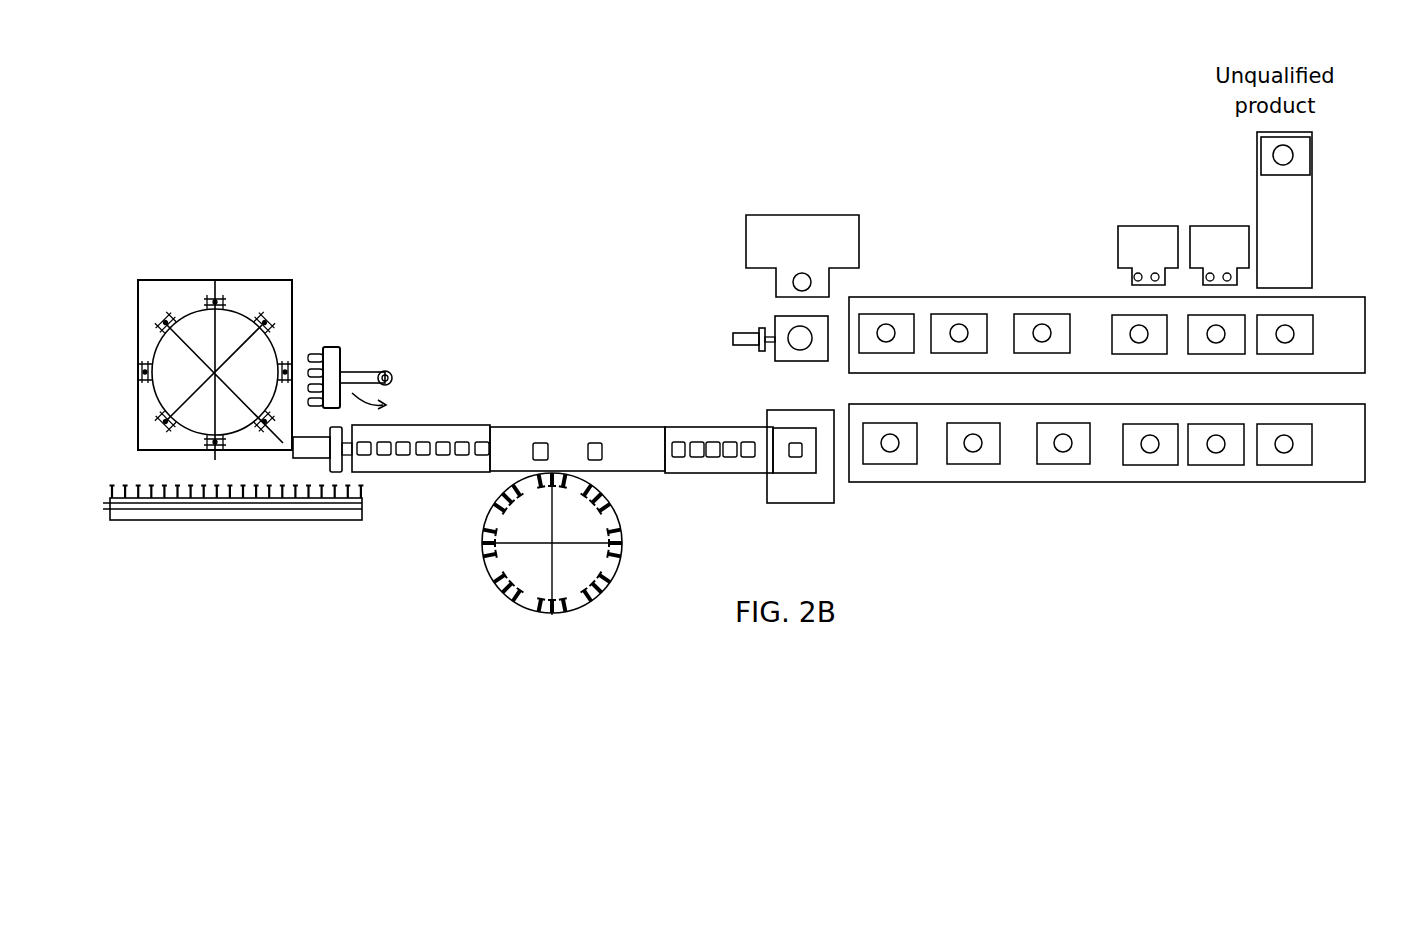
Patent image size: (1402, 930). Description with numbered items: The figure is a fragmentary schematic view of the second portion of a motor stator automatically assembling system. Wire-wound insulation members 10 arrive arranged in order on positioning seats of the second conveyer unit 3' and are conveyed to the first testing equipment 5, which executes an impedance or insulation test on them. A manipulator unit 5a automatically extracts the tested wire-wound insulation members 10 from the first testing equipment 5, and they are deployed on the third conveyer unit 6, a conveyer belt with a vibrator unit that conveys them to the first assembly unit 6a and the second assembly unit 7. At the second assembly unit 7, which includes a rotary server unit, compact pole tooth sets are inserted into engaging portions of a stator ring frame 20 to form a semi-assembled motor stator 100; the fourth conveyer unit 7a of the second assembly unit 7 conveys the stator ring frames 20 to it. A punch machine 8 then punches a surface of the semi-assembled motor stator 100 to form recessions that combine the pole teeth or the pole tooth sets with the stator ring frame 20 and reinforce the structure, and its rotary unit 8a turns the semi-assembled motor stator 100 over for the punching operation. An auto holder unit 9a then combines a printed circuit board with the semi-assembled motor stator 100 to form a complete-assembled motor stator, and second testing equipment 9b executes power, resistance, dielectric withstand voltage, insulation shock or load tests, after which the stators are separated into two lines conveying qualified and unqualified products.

The second conveyer unit 3' is at (275, 526).
The first testing equipment 5 is at (253, 290).
The manipulator unit 5a is at (359, 377).
The third conveyer unit 6 is at (460, 430).
The first assembly unit 6a is at (620, 572).
The wire-wound insulation member 10 is at (680, 443).
The second assembly unit 7 is at (828, 488).
The fourth conveyer unit 7a is at (1107, 465).
The stator ring frame 20 is at (988, 453).
The semi-assembled motor stator 100 is at (815, 348).
The punch machine 8 is at (803, 228).
The rotary unit 8a is at (745, 340).
The auto holder unit 9a is at (1143, 235).
The second testing equipment 9b is at (1218, 235).